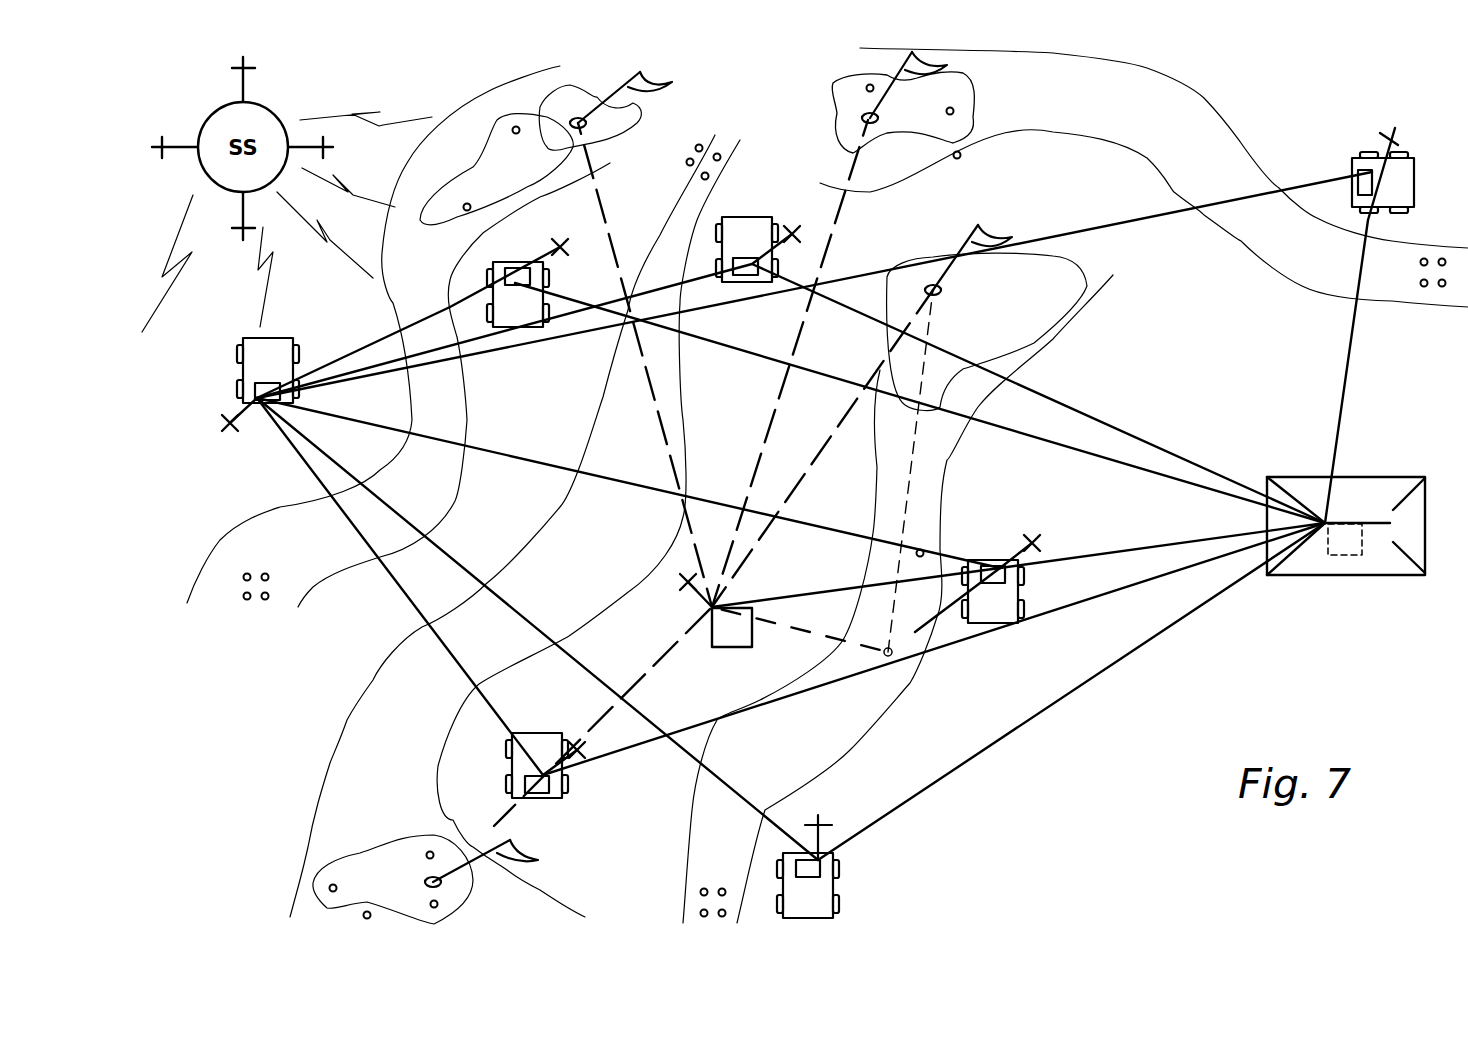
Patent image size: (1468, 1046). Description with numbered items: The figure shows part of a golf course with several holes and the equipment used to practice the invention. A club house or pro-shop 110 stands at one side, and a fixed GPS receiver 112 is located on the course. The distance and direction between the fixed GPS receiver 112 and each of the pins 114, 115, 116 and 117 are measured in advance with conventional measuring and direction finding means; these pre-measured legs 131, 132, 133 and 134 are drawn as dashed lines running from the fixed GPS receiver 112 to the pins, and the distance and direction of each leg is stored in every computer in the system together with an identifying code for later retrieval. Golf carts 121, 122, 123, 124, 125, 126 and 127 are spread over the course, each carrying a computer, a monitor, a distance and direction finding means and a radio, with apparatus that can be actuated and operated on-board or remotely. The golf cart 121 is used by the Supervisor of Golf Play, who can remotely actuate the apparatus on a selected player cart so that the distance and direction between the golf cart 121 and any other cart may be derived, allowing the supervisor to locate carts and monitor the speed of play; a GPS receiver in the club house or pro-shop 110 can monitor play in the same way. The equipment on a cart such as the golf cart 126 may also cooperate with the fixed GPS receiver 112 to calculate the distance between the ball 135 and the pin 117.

The club house or pro-shop 110 is at (1348, 580).
The fixed GPS receiver 112 is at (733, 648).
The pin 114 is at (440, 886).
The pin 115 is at (572, 123).
The pin 116 is at (864, 117).
The pin 117 is at (930, 288).
The golf cart 121 is at (258, 360).
The golf cart 122 is at (510, 262).
The golf cart 123 is at (748, 217).
The golf cart 124 is at (565, 798).
The golf cart 125 is at (827, 888).
The golf cart 126 is at (992, 625).
The golf cart 127 is at (1352, 160).
The pre-measured leg 131 is at (652, 668).
The pre-measured leg 132 is at (668, 457).
The pre-measured leg 133 is at (781, 390).
The pre-measured leg 134 is at (800, 477).
The ball 135 is at (890, 653).